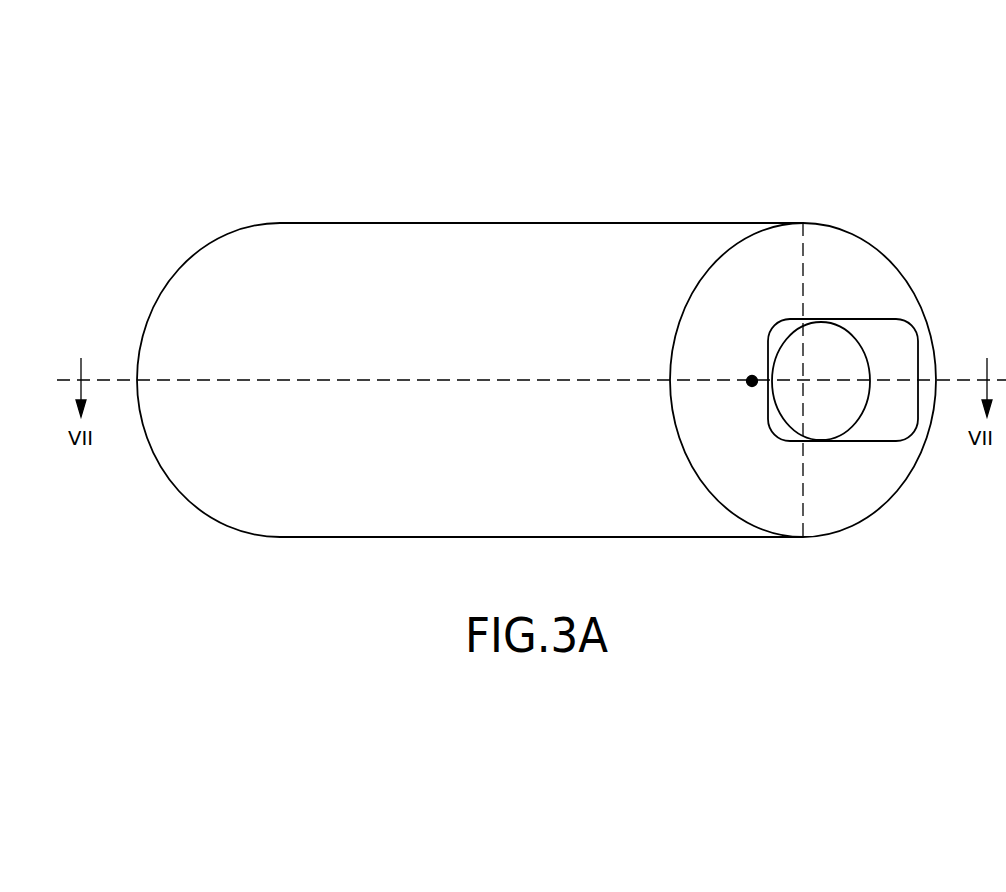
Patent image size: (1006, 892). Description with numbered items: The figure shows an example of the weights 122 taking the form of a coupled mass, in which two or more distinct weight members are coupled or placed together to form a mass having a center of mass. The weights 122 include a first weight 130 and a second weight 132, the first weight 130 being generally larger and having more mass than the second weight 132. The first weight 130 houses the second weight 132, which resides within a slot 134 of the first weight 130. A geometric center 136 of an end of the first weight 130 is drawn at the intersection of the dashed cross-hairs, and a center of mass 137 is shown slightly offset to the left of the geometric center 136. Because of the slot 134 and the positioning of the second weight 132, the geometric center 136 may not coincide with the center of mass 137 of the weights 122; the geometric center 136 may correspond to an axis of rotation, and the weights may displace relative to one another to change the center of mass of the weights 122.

The weights 122 is at (702, 150).
The first weight 130 is at (490, 362).
The second weight 132 is at (837, 417).
The slot 134 is at (905, 350).
The geometric center 136 is at (800, 380).
The center of mass 137 is at (749, 387).